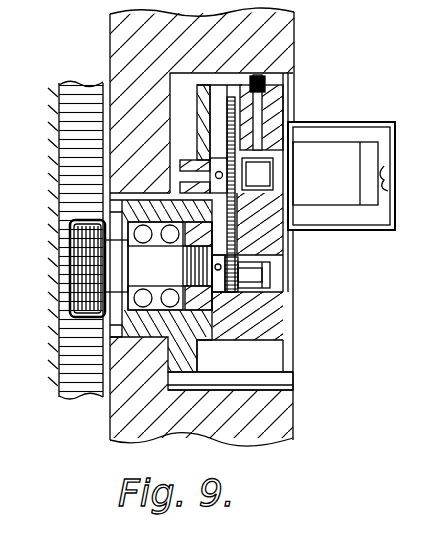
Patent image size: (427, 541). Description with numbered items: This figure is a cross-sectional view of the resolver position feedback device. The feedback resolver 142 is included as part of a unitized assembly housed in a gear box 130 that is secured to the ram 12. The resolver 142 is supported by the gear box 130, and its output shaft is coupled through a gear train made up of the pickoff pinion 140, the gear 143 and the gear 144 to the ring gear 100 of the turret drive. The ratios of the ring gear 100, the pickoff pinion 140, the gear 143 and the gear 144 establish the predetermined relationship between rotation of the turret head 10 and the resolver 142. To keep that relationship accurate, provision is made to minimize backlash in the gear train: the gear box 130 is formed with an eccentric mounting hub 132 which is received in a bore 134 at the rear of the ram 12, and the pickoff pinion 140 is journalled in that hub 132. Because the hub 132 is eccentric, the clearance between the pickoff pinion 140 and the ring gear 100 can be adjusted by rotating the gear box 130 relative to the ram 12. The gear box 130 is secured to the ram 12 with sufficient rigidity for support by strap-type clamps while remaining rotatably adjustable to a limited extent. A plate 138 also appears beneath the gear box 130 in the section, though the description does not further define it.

The ring gear 100 is at (69, 83).
The turret head 10 is at (55, 398).
The ram 12 is at (284, 429).
The plate 138 is at (280, 388).
The eccentric mounting hub 132 is at (197, 351).
The bore 134 is at (137, 338).
The pickoff pinion 140 is at (78, 253).
The gear box 130 is at (255, 337).
The gear 143 is at (262, 100).
The gear 144 is at (238, 288).
The feedback resolver 142 is at (330, 148).